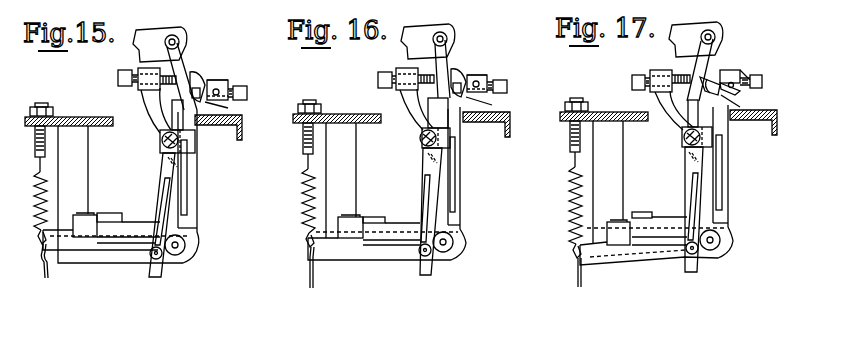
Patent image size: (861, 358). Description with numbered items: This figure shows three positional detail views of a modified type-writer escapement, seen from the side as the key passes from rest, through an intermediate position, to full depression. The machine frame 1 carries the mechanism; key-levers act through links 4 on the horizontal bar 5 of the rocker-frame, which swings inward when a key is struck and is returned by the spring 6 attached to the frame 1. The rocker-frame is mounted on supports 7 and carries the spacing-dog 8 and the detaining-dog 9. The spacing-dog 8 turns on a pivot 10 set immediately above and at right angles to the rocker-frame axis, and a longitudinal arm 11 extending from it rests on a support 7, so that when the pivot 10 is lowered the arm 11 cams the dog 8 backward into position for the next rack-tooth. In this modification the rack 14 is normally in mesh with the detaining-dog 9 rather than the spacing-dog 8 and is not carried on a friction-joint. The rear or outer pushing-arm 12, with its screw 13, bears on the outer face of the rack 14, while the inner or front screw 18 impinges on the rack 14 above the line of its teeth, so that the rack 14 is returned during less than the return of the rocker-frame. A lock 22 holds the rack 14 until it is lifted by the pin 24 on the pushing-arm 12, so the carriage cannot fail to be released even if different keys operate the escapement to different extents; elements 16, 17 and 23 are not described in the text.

In FIG. 15, the frame 1 is at (72, 117).
In FIG. 16, the frame 1 is at (401, 115).
In FIG. 17, the frame 1 is at (668, 115).
In FIG. 15, the links 4 is at (38, 269).
In FIG. 16, the links 4 is at (321, 272).
In FIG. 17, the links 4 is at (591, 280).
In FIG. 15, the horizontal bar 5 is at (38, 240).
In FIG. 16, the horizontal bar 5 is at (293, 250).
In FIG. 17, the horizontal bar 5 is at (564, 255).
In FIG. 15, the spring 6 is at (34, 206).
In FIG. 16, the spring 6 is at (296, 201).
In FIG. 17, the spring 6 is at (562, 205).
In FIG. 15, the supports 7 is at (187, 256).
In FIG. 16, the supports 7 is at (456, 250).
In FIG. 17, the supports 7 is at (723, 248).
In FIG. 15, the spacing-dog 8 is at (164, 163).
In FIG. 16, the spacing-dog 8 is at (420, 186).
In FIG. 17, the spacing-dog 8 is at (680, 186).
In FIG. 15, the detaining-dog 9 is at (196, 173).
In FIG. 16, the detaining-dog 9 is at (463, 175).
In FIG. 17, the detaining-dog 9 is at (728, 173).
In FIG. 15, the pivot 10 is at (79, 216).
In FIG. 16, the pivot 10 is at (346, 220).
In FIG. 17, the pivot 10 is at (614, 224).
In FIG. 15, the longitudinal arm 11 is at (110, 213).
In FIG. 16, the longitudinal arm 11 is at (391, 219).
In FIG. 17, the longitudinal arm 11 is at (659, 219).
In FIG. 15, the pushing-arm 12 is at (223, 85).
In FIG. 16, the pushing-arm 12 is at (489, 75).
In FIG. 17, the pushing-arm 12 is at (742, 72).
In FIG. 15, the screw 13 is at (247, 94).
In FIG. 16, the screw 13 is at (511, 83).
In FIG. 17, the screw 13 is at (764, 83).
In FIG. 15, the rack 14 is at (184, 67).
In FIG. 16, the rack 14 is at (440, 61).
In FIG. 17, the rack 14 is at (704, 61).
In FIG. 15, the connecting rod 16 is at (163, 206).
In FIG. 16, the connecting rod 16 is at (413, 208).
In FIG. 17, the connecting rod 16 is at (679, 206).
In FIG. 15, the curved arm 17 is at (148, 120).
In FIG. 16, the curved arm 17 is at (407, 116).
In FIG. 17, the curved arm 17 is at (670, 118).
In FIG. 15, the inner or front screw 18 is at (120, 76).
In FIG. 16, the inner or front screw 18 is at (392, 78).
In FIG. 17, the inner or front screw 18 is at (646, 81).
In FIG. 15, the lock 22 is at (199, 86).
In FIG. 16, the lock 22 is at (467, 78).
In FIG. 17, the lock 22 is at (710, 86).
In FIG. 15, the bracket 23 is at (228, 108).
In FIG. 16, the bracket 23 is at (500, 107).
In FIG. 17, the bracket 23 is at (753, 102).
In FIG. 15, the pin 24 is at (215, 87).
In FIG. 16, the pin 24 is at (506, 68).
In FIG. 17, the pin 24 is at (767, 67).